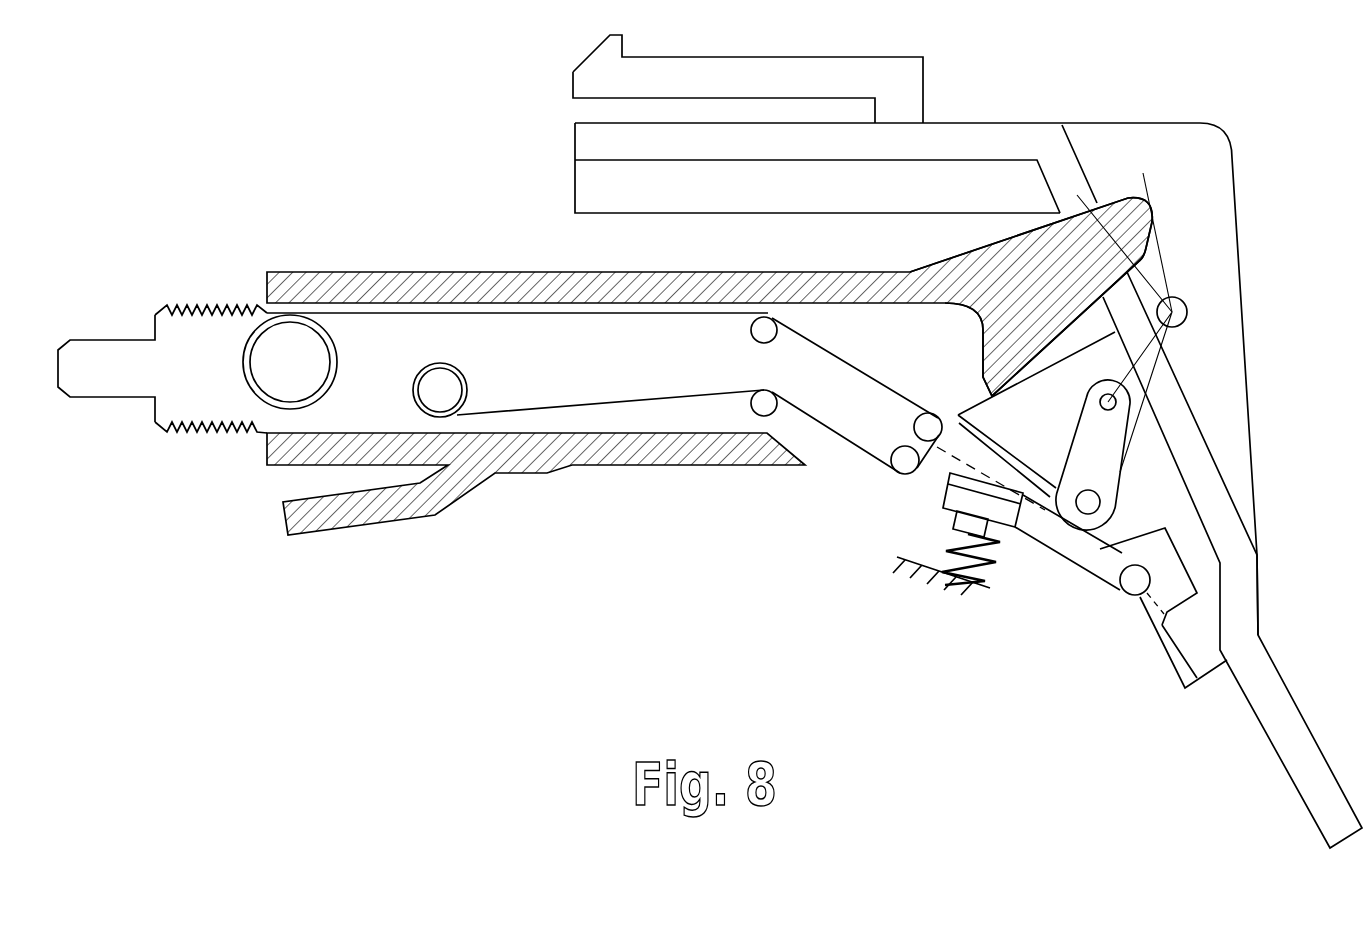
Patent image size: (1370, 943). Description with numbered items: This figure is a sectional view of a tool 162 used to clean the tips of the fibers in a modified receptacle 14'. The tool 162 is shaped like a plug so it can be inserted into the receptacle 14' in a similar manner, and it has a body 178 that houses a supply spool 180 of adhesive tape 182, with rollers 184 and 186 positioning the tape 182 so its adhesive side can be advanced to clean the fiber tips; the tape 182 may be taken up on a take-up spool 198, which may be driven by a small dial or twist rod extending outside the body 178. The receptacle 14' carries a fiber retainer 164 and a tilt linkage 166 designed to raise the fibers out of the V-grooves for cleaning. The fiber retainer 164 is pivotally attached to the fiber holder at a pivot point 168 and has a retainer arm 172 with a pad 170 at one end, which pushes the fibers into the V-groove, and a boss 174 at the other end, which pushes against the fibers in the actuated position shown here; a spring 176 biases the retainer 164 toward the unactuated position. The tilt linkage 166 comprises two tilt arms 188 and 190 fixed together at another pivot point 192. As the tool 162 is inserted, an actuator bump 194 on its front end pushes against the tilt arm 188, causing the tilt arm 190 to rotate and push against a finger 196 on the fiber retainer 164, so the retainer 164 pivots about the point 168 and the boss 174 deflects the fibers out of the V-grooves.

The modified receptacle 14' is at (915, 317).
The tool 162 is at (257, 512).
The fiber retainer 164 is at (1090, 590).
The tilt linkage 166 is at (1150, 182).
The pivot point 168 is at (1100, 500).
The pad 170 is at (947, 477).
The retainer arm 172 is at (1090, 563).
The boss 174 is at (1125, 590).
The spring 176 is at (937, 553).
The body 178 is at (480, 263).
The supply spool 180 is at (245, 355).
The adhesive tape 182 is at (580, 316).
The roller 184 is at (896, 450).
The roller 186 is at (933, 420).
The tilt arm 188 is at (1160, 251).
The tilt arm 190 is at (1127, 447).
The pivot point 192 is at (1187, 312).
The actuator bump 194 is at (1120, 205).
The finger 196 is at (1082, 432).
The take-up spool 198 is at (435, 400).